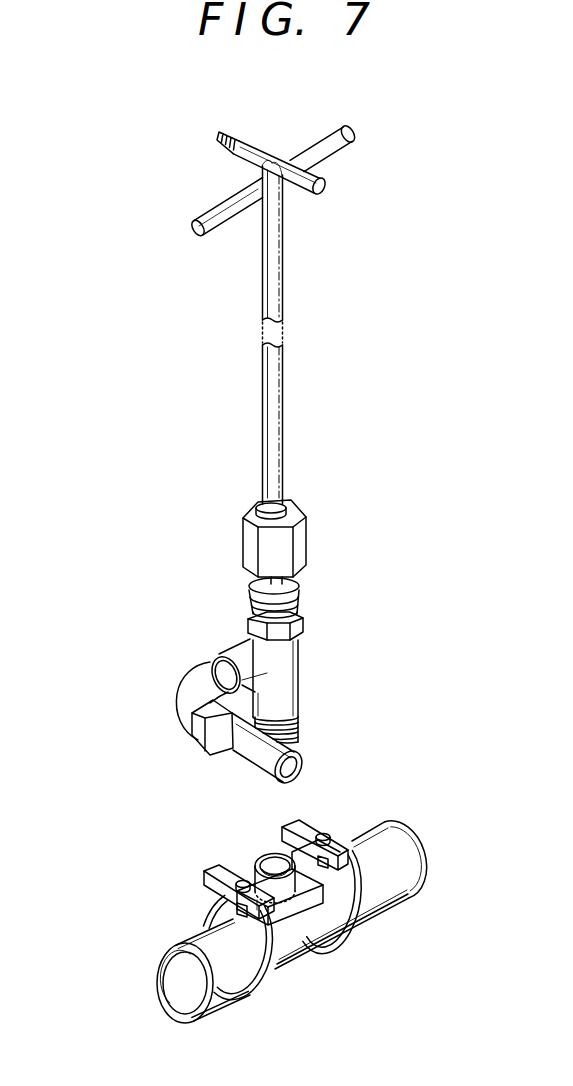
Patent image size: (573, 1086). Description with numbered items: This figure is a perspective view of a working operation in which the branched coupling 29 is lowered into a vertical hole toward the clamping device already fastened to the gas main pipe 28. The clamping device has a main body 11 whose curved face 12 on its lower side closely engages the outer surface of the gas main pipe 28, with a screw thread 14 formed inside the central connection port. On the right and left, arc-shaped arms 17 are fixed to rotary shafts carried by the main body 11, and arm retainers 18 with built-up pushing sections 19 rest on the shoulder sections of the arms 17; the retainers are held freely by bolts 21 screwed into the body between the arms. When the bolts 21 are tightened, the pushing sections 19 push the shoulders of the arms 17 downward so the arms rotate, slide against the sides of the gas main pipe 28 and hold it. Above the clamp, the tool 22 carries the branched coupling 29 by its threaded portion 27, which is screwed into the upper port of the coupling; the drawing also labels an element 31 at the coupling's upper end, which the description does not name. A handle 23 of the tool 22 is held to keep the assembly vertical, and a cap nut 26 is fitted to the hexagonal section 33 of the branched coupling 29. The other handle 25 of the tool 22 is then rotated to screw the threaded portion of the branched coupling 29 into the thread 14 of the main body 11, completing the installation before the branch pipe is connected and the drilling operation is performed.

The main body 11 is at (303, 907).
The curved face 12 is at (197, 937).
The screw thread 14 is at (268, 857).
The arc-shaped arms 17 is at (200, 903).
The arm retainers 18 is at (387, 830).
The pushing sections 19 is at (208, 877).
The bolts 21 is at (242, 880).
The tool 22 is at (286, 362).
The handle 23 is at (313, 179).
The handle 25 is at (223, 210).
The cap nut 26 is at (251, 535).
The threaded portion 27 is at (255, 584).
The gas main pipe 28 is at (408, 858).
The branched coupling 29 is at (297, 675).
The threaded portion 31 is at (297, 600).
The hexagonal section 33 is at (301, 621).